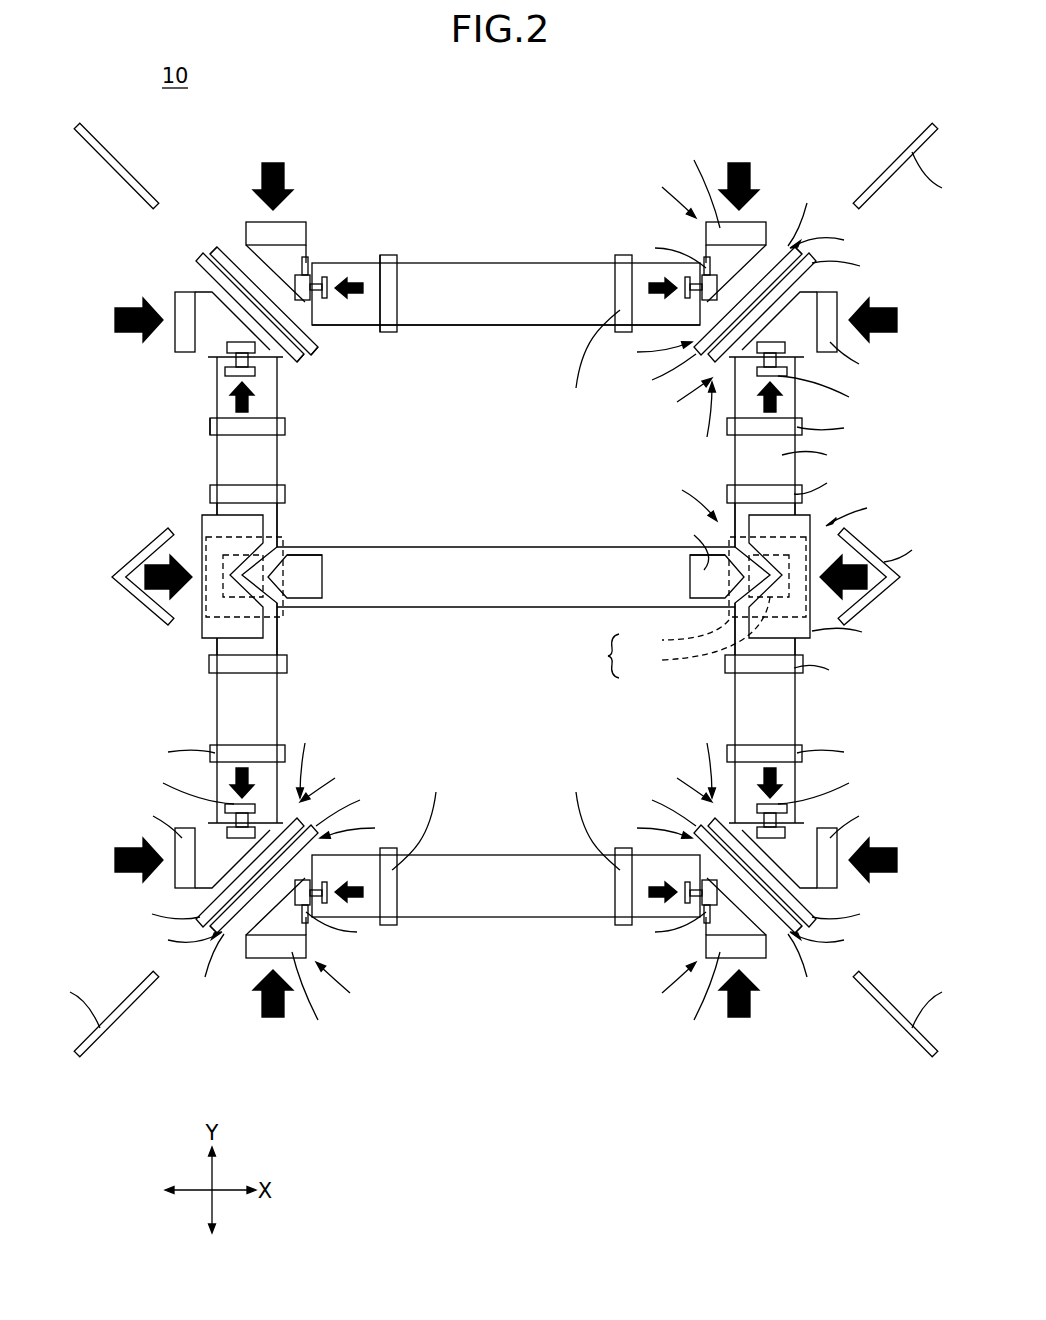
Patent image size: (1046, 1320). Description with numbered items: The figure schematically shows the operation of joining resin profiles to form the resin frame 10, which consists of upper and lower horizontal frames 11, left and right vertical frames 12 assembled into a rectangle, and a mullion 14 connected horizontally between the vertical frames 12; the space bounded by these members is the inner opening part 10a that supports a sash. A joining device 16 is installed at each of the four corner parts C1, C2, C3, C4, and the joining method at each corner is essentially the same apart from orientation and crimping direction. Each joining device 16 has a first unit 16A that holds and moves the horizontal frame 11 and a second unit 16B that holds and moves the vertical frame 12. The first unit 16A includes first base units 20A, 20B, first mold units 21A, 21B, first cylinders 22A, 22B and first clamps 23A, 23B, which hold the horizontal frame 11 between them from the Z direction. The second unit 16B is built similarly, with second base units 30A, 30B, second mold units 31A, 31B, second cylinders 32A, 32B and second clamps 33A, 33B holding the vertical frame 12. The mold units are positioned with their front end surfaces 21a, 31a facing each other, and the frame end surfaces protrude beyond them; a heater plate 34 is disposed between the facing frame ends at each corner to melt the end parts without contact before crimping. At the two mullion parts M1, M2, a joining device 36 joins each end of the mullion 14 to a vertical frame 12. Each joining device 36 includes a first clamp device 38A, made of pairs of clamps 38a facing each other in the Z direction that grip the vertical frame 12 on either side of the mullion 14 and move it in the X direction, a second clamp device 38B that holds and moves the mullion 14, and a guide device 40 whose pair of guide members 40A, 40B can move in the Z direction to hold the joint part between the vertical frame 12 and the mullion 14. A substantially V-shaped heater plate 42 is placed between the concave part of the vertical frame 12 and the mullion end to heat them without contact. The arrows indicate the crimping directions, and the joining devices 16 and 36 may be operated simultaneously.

The resin frame 10 is at (475, 562).
The inner opening part 10a is at (541, 328).
The horizontal frame 11 is at (479, 275).
The vertical frame 12 is at (230, 455).
The mullion 14 is at (500, 562).
The joining device 16 is at (316, 219).
The first unit 16A is at (324, 343).
The second unit 16B is at (300, 386).
The first base unit 20A is at (316, 219).
The first base unit 20B is at (292, 228).
The first mold unit 21A is at (243, 254).
The first mold unit 21B is at (224, 246).
The front end surface 21a is at (316, 354).
The first cylinder 22A is at (369, 263).
The first cylinder 22B is at (306, 268).
The first clamp 23A is at (461, 329).
The first clamp 23B is at (392, 310).
The second base unit 30A is at (165, 335).
The second base unit 30B is at (182, 342).
The second mold unit 31A is at (175, 307).
The second mold unit 31B is at (200, 263).
The front end surface 31a is at (303, 380).
The second cylinder 32A is at (172, 378).
The second cylinder 32B is at (234, 376).
The second clamp 33A is at (173, 429).
The second clamp 33B is at (215, 427).
The heater plate 34 is at (100, 152).
The joining device 36 is at (183, 524).
The first clamp device 38A is at (200, 631).
The second clamp device 38B is at (308, 570).
The clamp 38a is at (218, 494).
The guide device 40 is at (319, 607).
The guide member 40A is at (242, 597).
The guide member 40B is at (283, 620).
The heater plate 42 is at (128, 562).
The corner part C1 is at (792, 247).
The corner part C2 is at (220, 247).
The corner part C3 is at (220, 933).
The corner part C4 is at (792, 933).
The mullion part M1 is at (715, 518).
The mullion part M2 is at (297, 518).